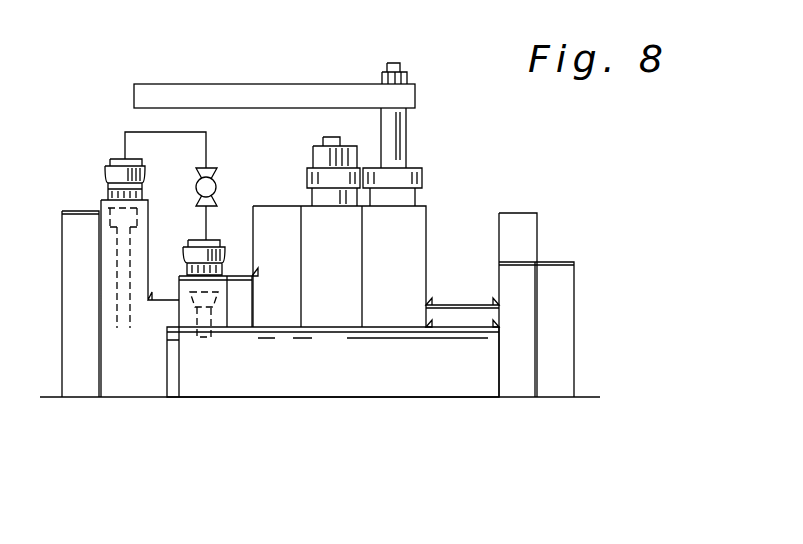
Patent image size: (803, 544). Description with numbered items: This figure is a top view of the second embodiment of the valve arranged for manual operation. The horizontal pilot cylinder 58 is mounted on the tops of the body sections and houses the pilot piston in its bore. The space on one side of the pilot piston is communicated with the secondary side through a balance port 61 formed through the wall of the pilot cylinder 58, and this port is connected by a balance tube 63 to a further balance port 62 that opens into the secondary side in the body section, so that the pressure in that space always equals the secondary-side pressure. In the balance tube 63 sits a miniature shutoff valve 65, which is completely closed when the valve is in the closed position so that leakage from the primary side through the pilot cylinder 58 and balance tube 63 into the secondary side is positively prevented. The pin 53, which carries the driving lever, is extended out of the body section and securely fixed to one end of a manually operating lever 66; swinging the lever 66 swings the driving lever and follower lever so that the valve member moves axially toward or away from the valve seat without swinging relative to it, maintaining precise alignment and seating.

The pin 53 is at (398, 142).
The pilot cylinder 58 is at (443, 340).
The balance port 61 is at (213, 244).
The balance port 62 is at (106, 173).
The balance tube 63 is at (207, 140).
The miniature shutoff valve 65 is at (219, 192).
The manually operating lever 66 is at (251, 93).